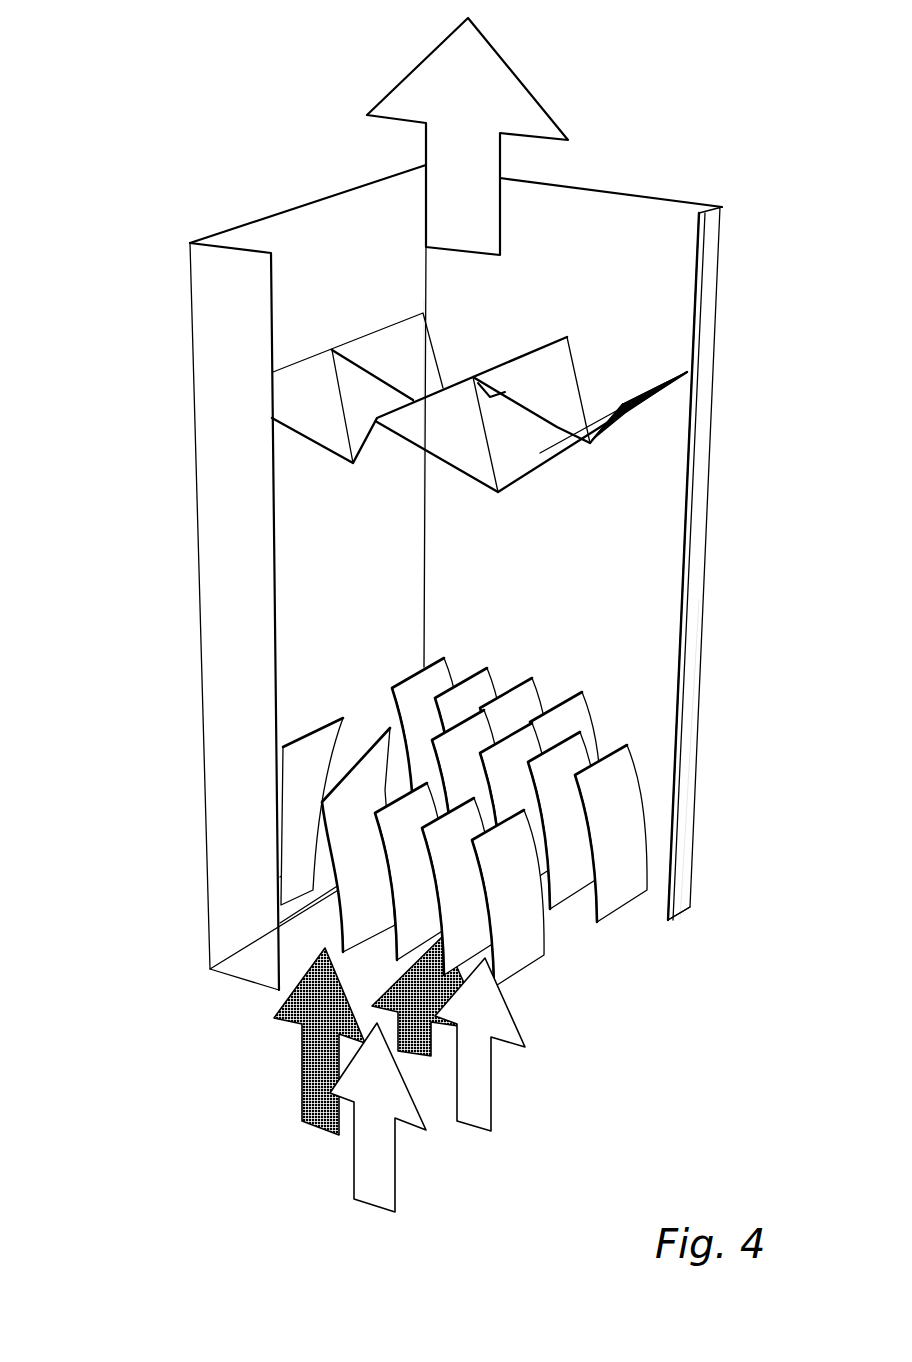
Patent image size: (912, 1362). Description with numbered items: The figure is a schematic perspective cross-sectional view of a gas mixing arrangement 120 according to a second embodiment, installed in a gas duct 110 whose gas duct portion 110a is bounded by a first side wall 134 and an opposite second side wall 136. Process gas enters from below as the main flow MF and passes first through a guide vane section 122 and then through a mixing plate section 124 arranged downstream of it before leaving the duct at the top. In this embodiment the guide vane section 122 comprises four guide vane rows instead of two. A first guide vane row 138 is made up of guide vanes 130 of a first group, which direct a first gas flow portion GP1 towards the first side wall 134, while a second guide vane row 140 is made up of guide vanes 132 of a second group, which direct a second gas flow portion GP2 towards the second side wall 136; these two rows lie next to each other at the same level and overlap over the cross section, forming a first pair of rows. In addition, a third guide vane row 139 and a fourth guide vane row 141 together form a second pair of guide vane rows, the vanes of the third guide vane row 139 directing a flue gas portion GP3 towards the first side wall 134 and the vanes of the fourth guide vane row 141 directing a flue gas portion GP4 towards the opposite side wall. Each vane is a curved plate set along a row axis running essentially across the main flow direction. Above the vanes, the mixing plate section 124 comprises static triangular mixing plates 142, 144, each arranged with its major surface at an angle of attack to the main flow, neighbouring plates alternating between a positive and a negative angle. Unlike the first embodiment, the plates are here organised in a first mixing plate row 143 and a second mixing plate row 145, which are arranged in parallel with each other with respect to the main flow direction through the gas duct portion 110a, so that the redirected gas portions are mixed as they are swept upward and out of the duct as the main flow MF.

The gas duct 110 is at (707, 320).
The gas duct portion 110a is at (697, 562).
The mixing arrangement 120 is at (137, 422).
The guide vane section 122 is at (316, 932).
The mixing plate section 124 is at (293, 448).
The guide vanes of the first group 130 is at (498, 666).
The guide vanes of the second group 132 is at (536, 918).
The first side wall 134 is at (690, 688).
The second side wall 136 is at (293, 273).
The first guide vane row 138 is at (402, 665).
The third guide vane row 139 is at (293, 735).
The second guide vane row 140 is at (628, 818).
The fourth guide vane row 141 is at (515, 943).
The mixing plate 142 is at (533, 368).
The first mixing plate row 143 is at (637, 432).
The mixing plate 144 is at (637, 405).
The second mixing plate row 145 is at (573, 460).
The main flow MF is at (502, 83).
The first gas flow portion GP1 is at (407, 997).
The second gas flow portion GP2 is at (496, 1119).
The flue gas portion GP3 is at (309, 1072).
The flue gas portion GP4 is at (374, 1201).